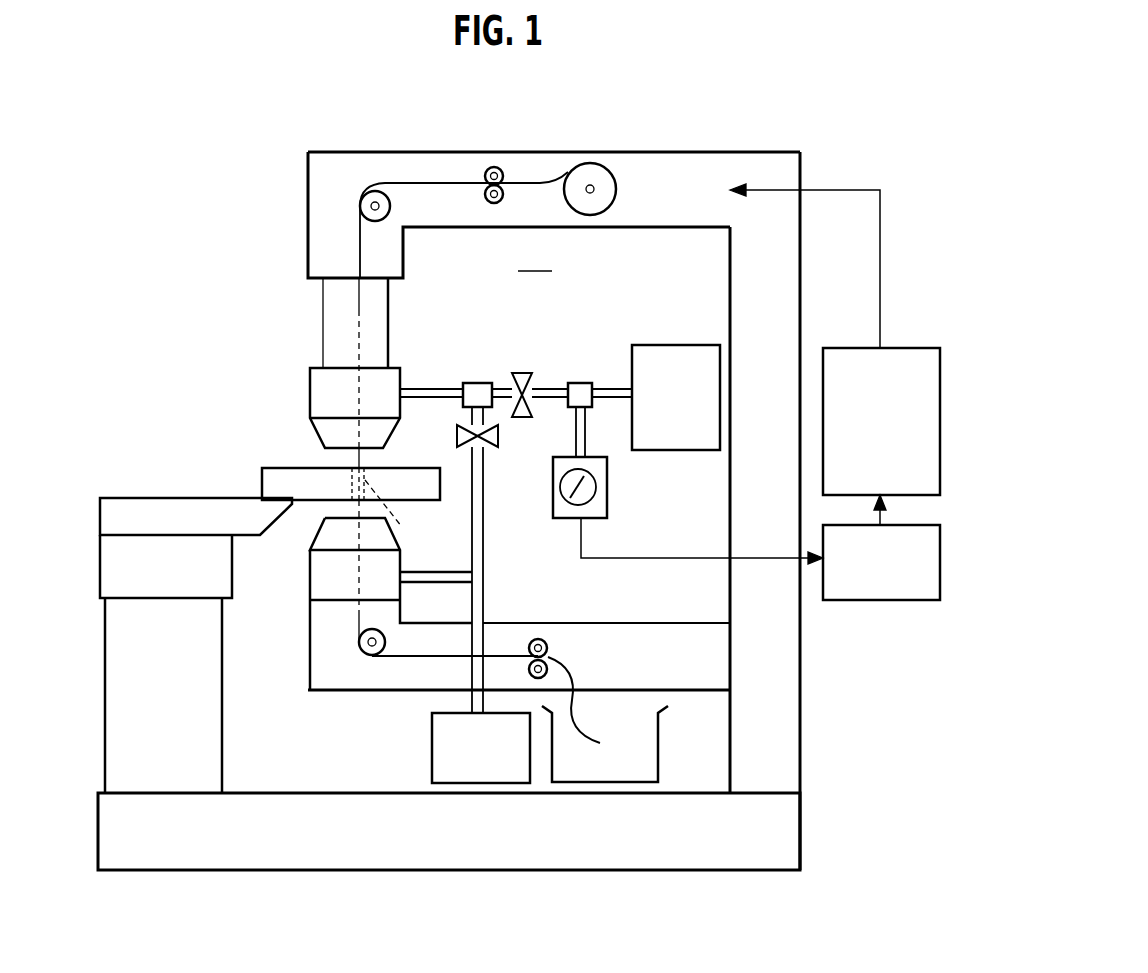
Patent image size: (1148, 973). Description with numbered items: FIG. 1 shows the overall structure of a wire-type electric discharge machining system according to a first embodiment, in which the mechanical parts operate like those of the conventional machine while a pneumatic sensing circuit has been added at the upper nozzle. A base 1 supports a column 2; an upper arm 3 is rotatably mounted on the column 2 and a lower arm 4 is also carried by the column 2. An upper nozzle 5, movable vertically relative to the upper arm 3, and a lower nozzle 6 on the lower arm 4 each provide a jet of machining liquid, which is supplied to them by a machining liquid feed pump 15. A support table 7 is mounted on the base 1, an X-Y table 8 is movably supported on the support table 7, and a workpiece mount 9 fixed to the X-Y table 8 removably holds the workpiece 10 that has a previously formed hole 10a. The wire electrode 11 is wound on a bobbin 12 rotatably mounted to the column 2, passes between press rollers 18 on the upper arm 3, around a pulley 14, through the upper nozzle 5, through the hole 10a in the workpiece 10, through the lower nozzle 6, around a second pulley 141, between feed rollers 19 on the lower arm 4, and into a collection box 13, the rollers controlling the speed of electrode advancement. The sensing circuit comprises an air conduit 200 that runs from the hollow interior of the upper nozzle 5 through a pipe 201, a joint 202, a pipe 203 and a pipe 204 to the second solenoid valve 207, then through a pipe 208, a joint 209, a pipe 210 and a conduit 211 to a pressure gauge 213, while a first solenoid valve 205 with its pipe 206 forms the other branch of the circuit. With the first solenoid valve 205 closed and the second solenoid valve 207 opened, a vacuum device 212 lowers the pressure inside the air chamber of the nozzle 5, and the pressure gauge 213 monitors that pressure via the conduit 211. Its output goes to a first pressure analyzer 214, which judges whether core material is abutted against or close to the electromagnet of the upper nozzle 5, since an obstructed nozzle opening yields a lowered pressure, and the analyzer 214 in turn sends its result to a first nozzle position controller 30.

The base 1 is at (772, 852).
The column 2 is at (775, 768).
The upper arm 3 is at (690, 213).
The lower arm 4 is at (672, 640).
The upper nozzle 5 is at (316, 382).
The lower nozzle 6 is at (322, 575).
The support table 7 is at (213, 572).
The X-Y table 8 is at (222, 714).
The workpiece mount 9 is at (198, 513).
The workpiece 10 is at (282, 477).
The hole 10a is at (405, 529).
The wire electrode 11 is at (442, 183).
The bobbin 12 is at (592, 178).
The collection box 13 is at (658, 770).
The pulley 14 is at (373, 190).
The machining liquid feed pump 15 is at (432, 760).
The press rollers 18 is at (500, 165).
The feed rollers 19 is at (543, 640).
The first nozzle position controller 30 is at (865, 347).
The pulley 141 is at (372, 656).
The air conduit 200 is at (535, 258).
The pipe 201 is at (413, 387).
The joint 202 is at (464, 385).
The pipe 203 is at (472, 413).
The pipe 204 is at (502, 387).
The first solenoid valve 205 is at (467, 440).
The pipe 206 is at (487, 528).
The second solenoid valve 207 is at (518, 370).
The pipe 208 is at (540, 387).
The joint 209 is at (578, 382).
The pipe 210 is at (606, 387).
The conduit 211 is at (587, 447).
The vacuum device 212 is at (673, 345).
The pressure gauge 213 is at (608, 507).
The first pressure analyzer 214 is at (915, 605).